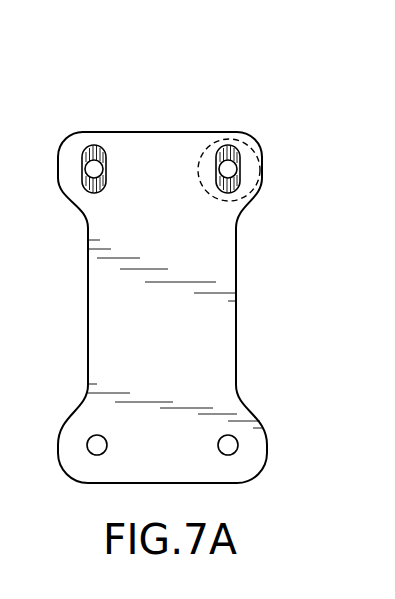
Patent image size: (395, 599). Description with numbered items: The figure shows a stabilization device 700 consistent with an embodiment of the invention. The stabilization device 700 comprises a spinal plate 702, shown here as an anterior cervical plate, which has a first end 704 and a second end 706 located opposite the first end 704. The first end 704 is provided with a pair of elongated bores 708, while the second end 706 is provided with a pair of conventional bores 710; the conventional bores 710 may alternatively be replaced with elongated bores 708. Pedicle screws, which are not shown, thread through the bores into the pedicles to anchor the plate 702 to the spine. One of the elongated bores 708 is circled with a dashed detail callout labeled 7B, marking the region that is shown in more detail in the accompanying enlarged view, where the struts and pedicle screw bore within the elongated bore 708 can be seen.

The stabilization device 700 is at (86, 95).
The spinal plate 702 is at (236, 333).
The first end 704 is at (290, 207).
The second end 706 is at (283, 490).
The elongated bore 708 is at (91, 194).
The conventional bore 710 is at (88, 439).
The detail region shown in FIG. 7B is at (262, 152).